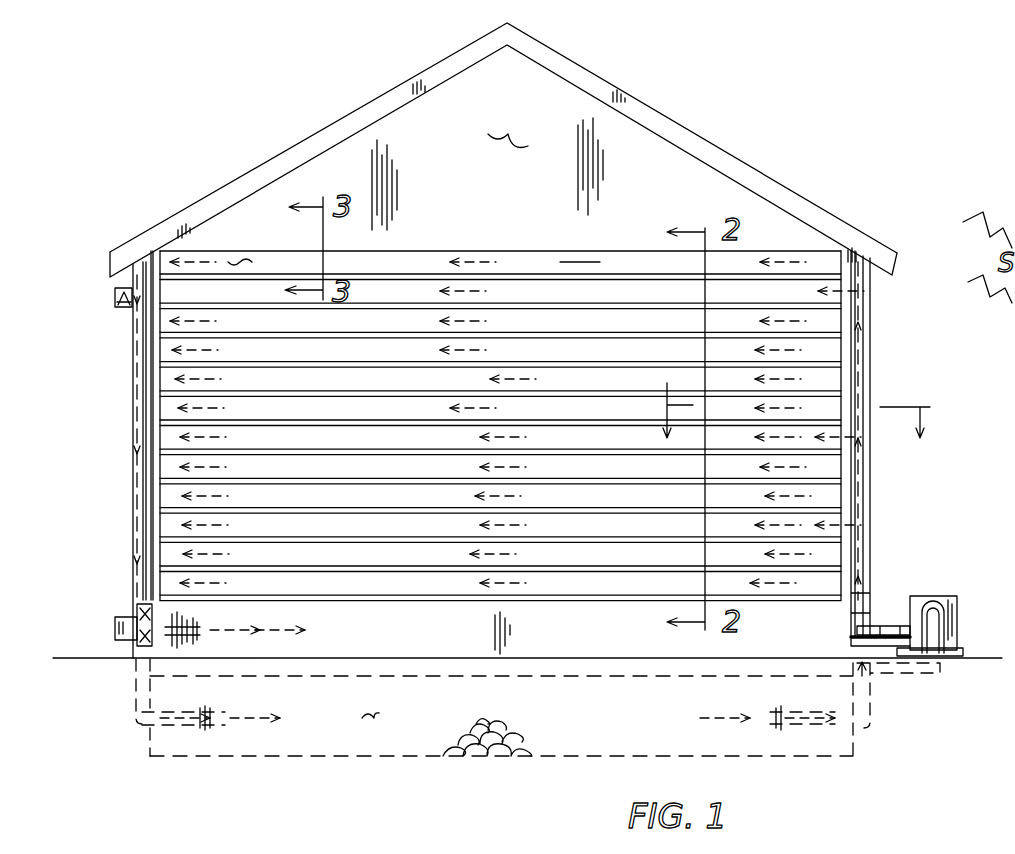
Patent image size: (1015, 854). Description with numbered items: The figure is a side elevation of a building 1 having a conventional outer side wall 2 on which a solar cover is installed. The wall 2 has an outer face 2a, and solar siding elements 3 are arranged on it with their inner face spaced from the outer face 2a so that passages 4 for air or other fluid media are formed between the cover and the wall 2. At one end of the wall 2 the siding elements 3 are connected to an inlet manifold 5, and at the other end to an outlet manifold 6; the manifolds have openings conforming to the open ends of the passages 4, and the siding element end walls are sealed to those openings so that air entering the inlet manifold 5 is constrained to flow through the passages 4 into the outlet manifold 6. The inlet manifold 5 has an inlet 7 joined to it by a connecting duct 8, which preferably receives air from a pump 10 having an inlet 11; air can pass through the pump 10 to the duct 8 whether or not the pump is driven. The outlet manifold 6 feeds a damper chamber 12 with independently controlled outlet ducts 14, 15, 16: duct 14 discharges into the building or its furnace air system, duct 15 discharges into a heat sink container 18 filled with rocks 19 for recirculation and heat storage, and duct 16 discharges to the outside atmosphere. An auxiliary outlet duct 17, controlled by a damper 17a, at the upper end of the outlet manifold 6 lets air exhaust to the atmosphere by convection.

The building 1 is at (736, 154).
The outer side wall 2 is at (524, 136).
The outer face 2a is at (582, 262).
The solar siding elements 3 is at (243, 242).
The passages 4 is at (793, 390).
The inlet manifold 5 is at (872, 372).
The outlet manifold 6 is at (137, 412).
The inlet 7 is at (860, 632).
The connecting duct 8 is at (870, 630).
The pump 10 is at (943, 595).
The inlet 11 is at (868, 718).
The damper chamber 12 is at (137, 616).
The outlet duct 14 is at (214, 635).
The outlet duct 15 is at (185, 727).
The outlet duct 16 is at (115, 624).
The auxiliary outlet duct 17 is at (117, 298).
The damper 17a is at (128, 305).
The container 18 is at (375, 730).
The rocks 19 is at (500, 754).